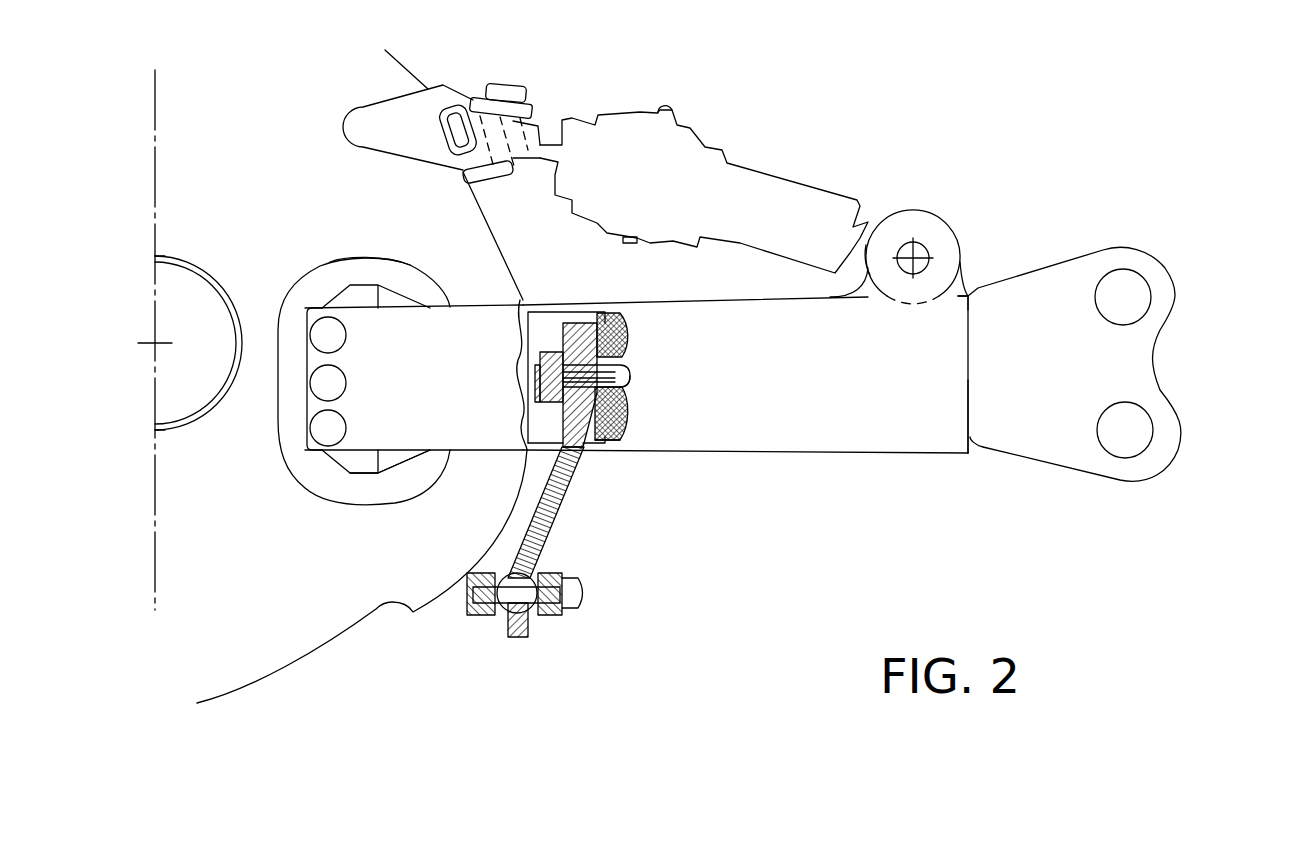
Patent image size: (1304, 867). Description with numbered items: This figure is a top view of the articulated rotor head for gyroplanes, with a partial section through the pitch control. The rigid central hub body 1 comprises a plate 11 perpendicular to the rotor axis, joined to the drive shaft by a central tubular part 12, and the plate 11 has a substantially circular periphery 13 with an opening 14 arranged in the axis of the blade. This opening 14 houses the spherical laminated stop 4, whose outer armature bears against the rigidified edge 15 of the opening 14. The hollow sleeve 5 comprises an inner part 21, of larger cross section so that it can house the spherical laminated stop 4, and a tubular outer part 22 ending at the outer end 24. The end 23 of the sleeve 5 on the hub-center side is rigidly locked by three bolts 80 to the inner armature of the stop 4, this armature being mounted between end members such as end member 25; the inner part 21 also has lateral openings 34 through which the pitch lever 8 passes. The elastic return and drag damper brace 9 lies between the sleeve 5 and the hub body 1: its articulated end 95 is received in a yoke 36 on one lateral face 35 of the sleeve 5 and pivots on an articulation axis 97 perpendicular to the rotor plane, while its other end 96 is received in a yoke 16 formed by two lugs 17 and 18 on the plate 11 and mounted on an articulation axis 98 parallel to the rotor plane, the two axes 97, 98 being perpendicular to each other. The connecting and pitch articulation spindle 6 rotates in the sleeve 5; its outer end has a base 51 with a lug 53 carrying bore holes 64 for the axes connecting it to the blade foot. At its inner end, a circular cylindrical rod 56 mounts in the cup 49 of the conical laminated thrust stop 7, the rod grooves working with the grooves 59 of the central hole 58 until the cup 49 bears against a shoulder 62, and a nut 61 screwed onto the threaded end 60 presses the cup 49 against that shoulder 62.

The central hub body 1 is at (310, 670).
The spherical laminated stop 4 is at (404, 468).
The hollow sleeve 5 is at (808, 378).
The connecting and pitch articulation spindle 6 is at (640, 387).
The conical laminated thrust stop 7 is at (622, 330).
The pitch lever 8 is at (550, 525).
The elastic return and drag damper brace 9 is at (760, 197).
The plate 11 is at (214, 177).
The central tubular part 12 is at (230, 347).
The periphery 13 is at (508, 255).
The opening 14 is at (332, 282).
The rigidified edge 15 is at (445, 298).
The yoke 16 is at (453, 82).
The lug 17 is at (473, 100).
The lug 18 is at (490, 172).
The inner part 21 is at (421, 385).
The outer part 22 is at (782, 415).
The end of hollow sleeve 23 is at (360, 400).
The outer end 24 is at (968, 297).
The end member 25 is at (300, 411).
The lateral opening 34 is at (548, 443).
The lateral face 35 is at (753, 296).
The yoke 36 is at (948, 233).
The cup 49 is at (582, 323).
The base 51 is at (980, 380).
The lug 53 is at (1078, 378).
The circular cylindrical rod 56 is at (630, 388).
The central hole 58 is at (598, 398).
The grooves 59 is at (584, 450).
The threaded end 60 is at (538, 385).
The nut 61 is at (537, 447).
The shoulder 62 is at (630, 372).
The bore holes 64 is at (1122, 283).
The bolts 80 is at (325, 330).
The articulated end 95 is at (862, 237).
The end 96 is at (515, 135).
The articulation axis 97 is at (913, 242).
The articulation axis 98 is at (513, 88).